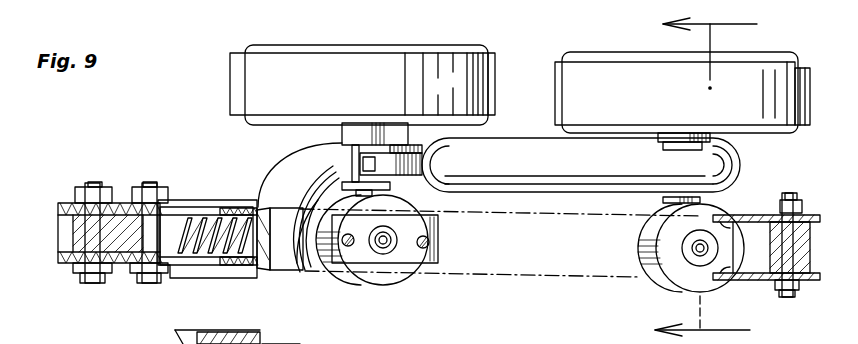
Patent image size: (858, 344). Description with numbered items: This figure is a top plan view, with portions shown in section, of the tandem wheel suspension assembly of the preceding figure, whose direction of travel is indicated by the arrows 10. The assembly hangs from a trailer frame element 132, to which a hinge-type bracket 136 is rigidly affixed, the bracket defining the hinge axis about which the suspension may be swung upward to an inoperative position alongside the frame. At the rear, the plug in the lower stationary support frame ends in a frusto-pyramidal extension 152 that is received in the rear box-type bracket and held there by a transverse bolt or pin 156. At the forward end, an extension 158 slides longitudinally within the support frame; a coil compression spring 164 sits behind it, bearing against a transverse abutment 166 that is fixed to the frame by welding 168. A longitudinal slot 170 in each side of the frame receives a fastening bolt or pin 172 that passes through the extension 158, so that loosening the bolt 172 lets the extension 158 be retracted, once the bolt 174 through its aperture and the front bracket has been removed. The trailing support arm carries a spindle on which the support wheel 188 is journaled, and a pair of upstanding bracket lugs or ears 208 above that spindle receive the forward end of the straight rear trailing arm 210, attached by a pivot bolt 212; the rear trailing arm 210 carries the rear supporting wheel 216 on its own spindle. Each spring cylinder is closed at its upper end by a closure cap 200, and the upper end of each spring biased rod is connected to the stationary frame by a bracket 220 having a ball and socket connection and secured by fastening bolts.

The direction of travel arrow 10 is at (718, 176).
The trailer frame element 132 is at (208, 330).
The bracket 136 is at (285, 337).
The frusto-pyramidal extension 152 is at (812, 260).
The transverse bolt or pin 156 is at (787, 298).
The extension 158 is at (127, 243).
The coil compression spring 164 is at (208, 215).
The transverse abutment 166 is at (257, 250).
The welding 168 is at (268, 210).
The longitudinal slot 170 is at (207, 267).
The fastening bolt or pin 172 is at (150, 183).
The bolt 174 is at (93, 183).
The support wheel 188 is at (345, 68).
The closure cap 200 is at (360, 288).
The upstanding bracket lugs or ears 208 is at (412, 148).
The rear trailing arm 210 is at (505, 145).
The pivot bolt 212 is at (402, 135).
The supporting wheel 216 is at (792, 105).
The bracket 220 is at (410, 258).